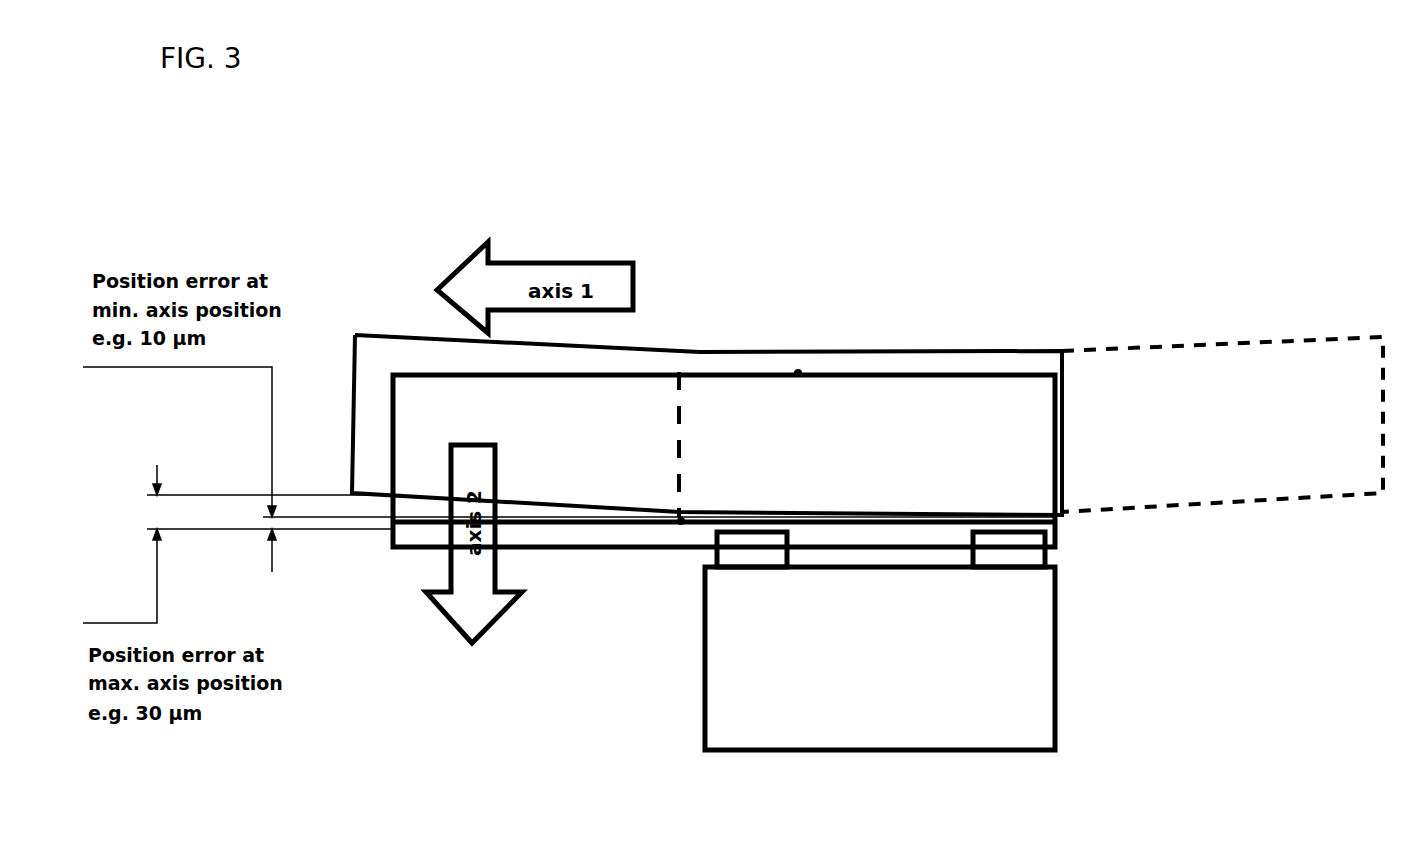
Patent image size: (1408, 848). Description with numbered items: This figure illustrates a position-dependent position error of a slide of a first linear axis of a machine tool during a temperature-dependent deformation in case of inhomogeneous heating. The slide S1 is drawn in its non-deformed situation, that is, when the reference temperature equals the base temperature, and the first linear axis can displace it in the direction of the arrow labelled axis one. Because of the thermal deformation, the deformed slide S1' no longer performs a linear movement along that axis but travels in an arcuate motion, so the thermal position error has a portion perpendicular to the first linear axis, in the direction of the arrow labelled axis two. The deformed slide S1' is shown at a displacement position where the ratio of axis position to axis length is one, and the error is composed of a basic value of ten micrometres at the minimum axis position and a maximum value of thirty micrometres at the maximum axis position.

The slide S1 is at (676, 410).
The deformed slide S1' is at (707, 378).